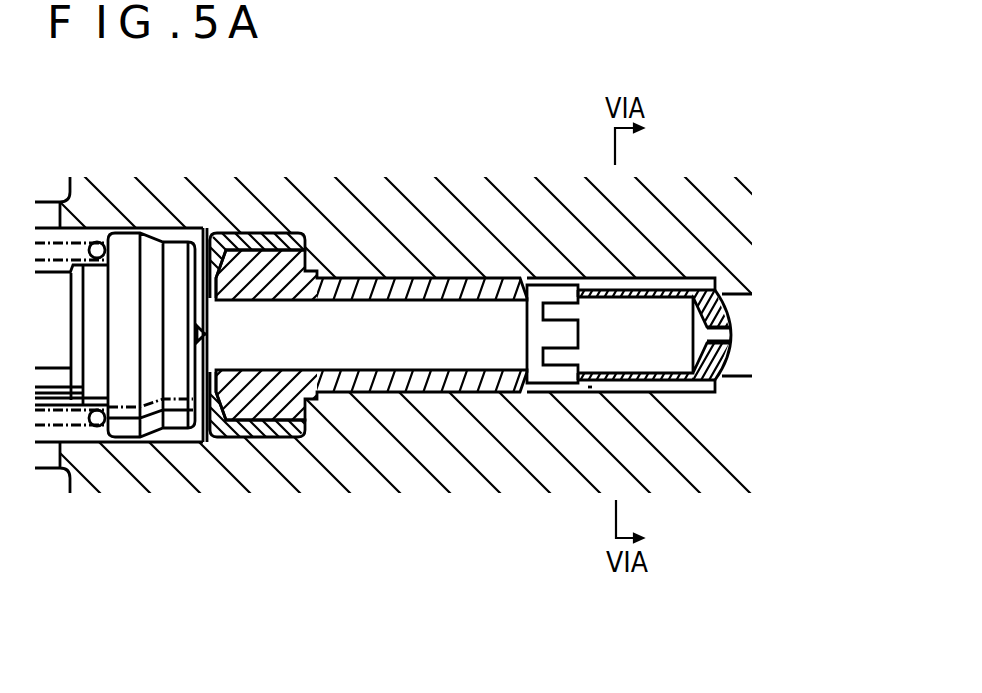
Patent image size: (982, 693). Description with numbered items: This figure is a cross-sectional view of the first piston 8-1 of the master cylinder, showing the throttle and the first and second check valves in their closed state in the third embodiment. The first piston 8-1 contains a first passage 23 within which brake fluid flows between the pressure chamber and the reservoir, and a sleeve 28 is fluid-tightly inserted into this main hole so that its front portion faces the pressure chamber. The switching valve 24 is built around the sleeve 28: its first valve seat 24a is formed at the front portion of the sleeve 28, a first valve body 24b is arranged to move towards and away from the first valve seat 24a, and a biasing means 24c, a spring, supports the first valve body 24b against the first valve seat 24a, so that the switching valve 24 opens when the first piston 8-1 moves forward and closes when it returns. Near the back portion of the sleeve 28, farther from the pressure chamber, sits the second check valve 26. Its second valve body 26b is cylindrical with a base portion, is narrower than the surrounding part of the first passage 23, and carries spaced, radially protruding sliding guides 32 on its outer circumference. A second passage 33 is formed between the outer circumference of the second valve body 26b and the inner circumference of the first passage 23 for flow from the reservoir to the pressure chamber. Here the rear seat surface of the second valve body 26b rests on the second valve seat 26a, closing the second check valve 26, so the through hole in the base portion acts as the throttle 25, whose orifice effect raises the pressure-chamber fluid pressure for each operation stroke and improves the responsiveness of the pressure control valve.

The first piston 8-1 is at (380, 205).
The sleeve 28 is at (333, 277).
The sliding guides 32 is at (558, 296).
The second check valve 26 is at (672, 84).
The second valve seat 26a is at (733, 290).
The second valve body 26b is at (699, 290).
The throttle 25 is at (718, 340).
The first passage 23 is at (738, 355).
The second passage 33 is at (590, 386).
The switching valve 24 is at (77, 597).
The first valve seat 24a is at (204, 442).
The first valve body 24b is at (141, 438).
The biasing means 24c is at (77, 441).